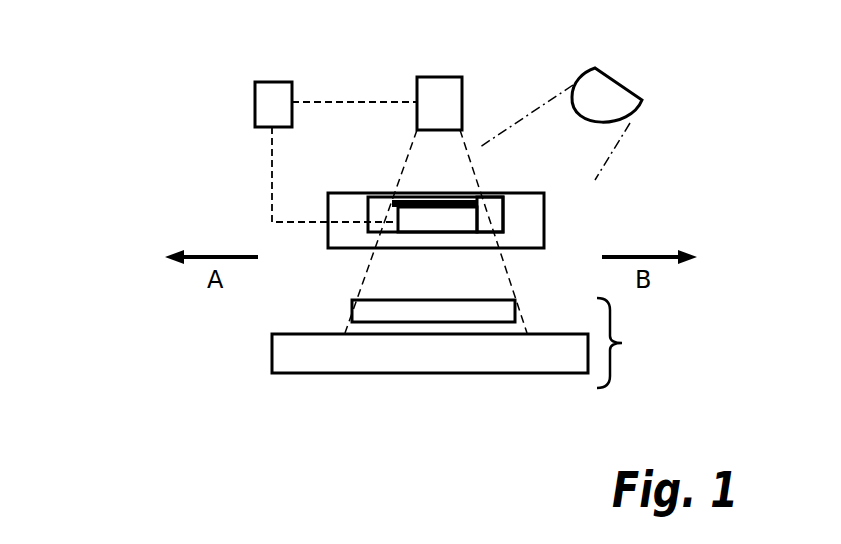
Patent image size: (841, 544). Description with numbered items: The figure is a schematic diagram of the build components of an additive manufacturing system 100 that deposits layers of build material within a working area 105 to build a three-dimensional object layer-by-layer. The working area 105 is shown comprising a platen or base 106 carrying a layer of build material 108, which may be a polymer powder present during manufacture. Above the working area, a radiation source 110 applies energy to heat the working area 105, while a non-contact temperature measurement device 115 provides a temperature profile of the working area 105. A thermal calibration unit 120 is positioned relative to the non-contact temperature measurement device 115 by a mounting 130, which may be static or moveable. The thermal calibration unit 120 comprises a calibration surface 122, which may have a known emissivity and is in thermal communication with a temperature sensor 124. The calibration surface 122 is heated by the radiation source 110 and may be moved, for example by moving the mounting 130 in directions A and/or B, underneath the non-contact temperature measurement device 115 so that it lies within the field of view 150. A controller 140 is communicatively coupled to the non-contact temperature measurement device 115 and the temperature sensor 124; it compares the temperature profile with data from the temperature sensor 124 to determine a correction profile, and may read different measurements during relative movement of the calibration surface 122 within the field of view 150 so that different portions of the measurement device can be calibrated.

The additive manufacturing system 100 is at (134, 66).
The working area 105 is at (622, 343).
The platen or base 106 is at (312, 373).
The layer of build material 108 is at (515, 310).
The radiation source 110 is at (613, 78).
The non-contact temperature measurement device 115 is at (462, 78).
The thermal calibration unit 120 is at (505, 215).
The calibration surface 122 is at (412, 192).
The temperature sensor 124 is at (502, 197).
The mounting 130 is at (327, 242).
The controller 140 is at (270, 82).
The field of view 150 is at (407, 157).